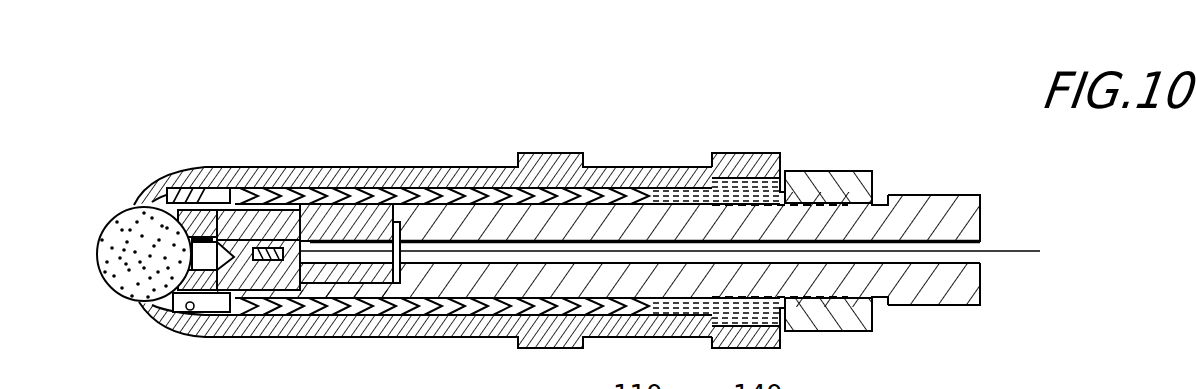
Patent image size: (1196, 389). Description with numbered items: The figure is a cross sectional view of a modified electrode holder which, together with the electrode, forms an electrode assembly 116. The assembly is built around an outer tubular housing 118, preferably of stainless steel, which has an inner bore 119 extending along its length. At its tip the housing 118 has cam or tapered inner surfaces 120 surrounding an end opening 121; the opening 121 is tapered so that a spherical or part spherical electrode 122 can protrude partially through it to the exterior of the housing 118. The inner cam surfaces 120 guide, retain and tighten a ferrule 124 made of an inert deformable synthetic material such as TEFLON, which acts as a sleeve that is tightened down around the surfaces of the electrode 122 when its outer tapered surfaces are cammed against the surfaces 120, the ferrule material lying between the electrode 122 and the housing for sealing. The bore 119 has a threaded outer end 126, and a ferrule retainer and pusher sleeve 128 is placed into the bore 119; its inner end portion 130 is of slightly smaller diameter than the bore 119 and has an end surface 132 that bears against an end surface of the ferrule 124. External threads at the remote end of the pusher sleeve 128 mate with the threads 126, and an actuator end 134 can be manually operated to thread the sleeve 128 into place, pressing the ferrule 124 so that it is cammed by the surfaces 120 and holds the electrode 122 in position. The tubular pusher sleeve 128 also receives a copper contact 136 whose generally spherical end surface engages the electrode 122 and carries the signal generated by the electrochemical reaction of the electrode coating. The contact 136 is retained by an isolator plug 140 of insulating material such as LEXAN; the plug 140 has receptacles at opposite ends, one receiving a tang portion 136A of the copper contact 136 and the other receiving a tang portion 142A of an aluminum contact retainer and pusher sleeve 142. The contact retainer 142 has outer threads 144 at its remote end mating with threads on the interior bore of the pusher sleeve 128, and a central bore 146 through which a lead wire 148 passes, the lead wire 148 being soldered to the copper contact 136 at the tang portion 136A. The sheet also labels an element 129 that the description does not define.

The electrode assembly 116 is at (493, 62).
The outer tubular housing 118 is at (352, 170).
The inner bore 119 is at (528, 185).
The cam or tapered inner surfaces 120 is at (187, 190).
The end opening 121 is at (135, 200).
The spherical electrode 122 is at (112, 225).
The ferrule 124 is at (150, 303).
The threaded outer end 126 is at (630, 225).
The ferrule retainer and pusher sleeve 128 is at (353, 312).
The lower braided layer 129 is at (450, 307).
The inner end portion 130 is at (240, 190).
The end surface 132 is at (190, 305).
The actuator end 134 is at (807, 173).
The copper contact 136 is at (250, 265).
The tang portion 136A is at (280, 213).
The isolator plug 140 is at (357, 225).
The contact retainer and pusher sleeve 142 is at (700, 195).
The tang portion 142A is at (453, 230).
The outer threads 144 is at (835, 200).
The central bore 146 is at (913, 237).
The lead wire 148 is at (998, 251).